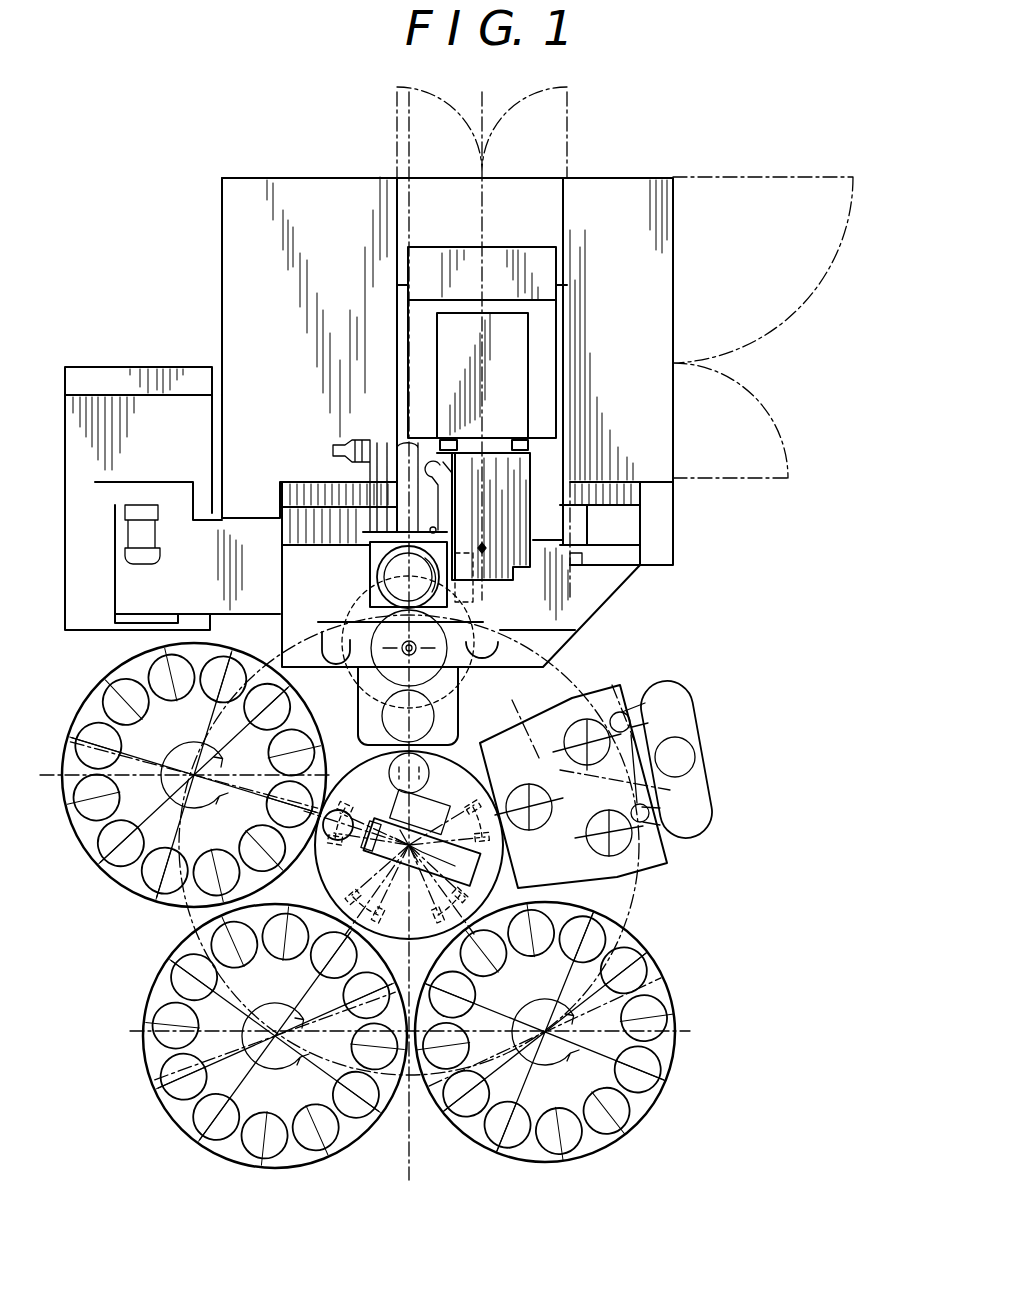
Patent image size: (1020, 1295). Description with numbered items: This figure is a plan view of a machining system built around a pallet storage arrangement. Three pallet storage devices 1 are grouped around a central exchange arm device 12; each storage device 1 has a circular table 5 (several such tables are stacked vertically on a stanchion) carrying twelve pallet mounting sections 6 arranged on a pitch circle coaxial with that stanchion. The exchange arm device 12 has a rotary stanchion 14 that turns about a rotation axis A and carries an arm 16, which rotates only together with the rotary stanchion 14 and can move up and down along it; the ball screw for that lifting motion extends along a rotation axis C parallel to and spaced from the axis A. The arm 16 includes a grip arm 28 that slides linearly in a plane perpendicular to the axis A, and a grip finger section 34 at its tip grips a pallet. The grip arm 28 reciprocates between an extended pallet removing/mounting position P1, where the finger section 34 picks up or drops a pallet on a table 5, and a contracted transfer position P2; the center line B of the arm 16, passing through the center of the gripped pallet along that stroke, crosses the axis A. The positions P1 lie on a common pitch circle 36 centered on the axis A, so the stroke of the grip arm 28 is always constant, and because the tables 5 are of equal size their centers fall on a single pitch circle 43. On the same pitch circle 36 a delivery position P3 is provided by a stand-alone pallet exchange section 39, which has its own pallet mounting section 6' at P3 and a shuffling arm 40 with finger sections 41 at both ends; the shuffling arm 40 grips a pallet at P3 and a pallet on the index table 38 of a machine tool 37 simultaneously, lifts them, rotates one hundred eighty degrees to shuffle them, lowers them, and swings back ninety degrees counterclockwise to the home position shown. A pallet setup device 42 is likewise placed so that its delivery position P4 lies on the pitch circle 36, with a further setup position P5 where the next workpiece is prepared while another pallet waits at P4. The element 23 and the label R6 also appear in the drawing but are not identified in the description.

The pallet storage device 1 is at (376, 919).
The table 5 is at (87, 868).
The pallet mounting section 6 is at (376, 899).
The pallet mounting section 6' is at (441, 710).
The exchange arm device 12 is at (386, 767).
The rotary stanchion 14 is at (425, 770).
The arm 16 is at (403, 846).
The support bar 23 is at (563, 652).
The grip arm 28 is at (381, 801).
The grip finger section 34 is at (227, 776).
The pitch circle 36 is at (460, 735).
The machine tool 37 is at (622, 572).
The index table 38 is at (370, 566).
The pallet exchange section 39 is at (482, 616).
The shuffling arm 40 is at (358, 640).
The finger sections 41 is at (335, 648).
The pallet setup device 42 is at (672, 853).
The pitch circle 43 is at (409, 904).
The rotation axis A is at (396, 925).
The center line B is at (358, 872).
The rotation axis C is at (421, 852).
The pallet removing/mounting position P1 is at (285, 800).
The transfer position P2 is at (349, 844).
The delivery position P3 is at (383, 710).
The delivery position P4 is at (534, 822).
The setup position P5 is at (592, 722).
The clamp pivot R6 is at (625, 845).